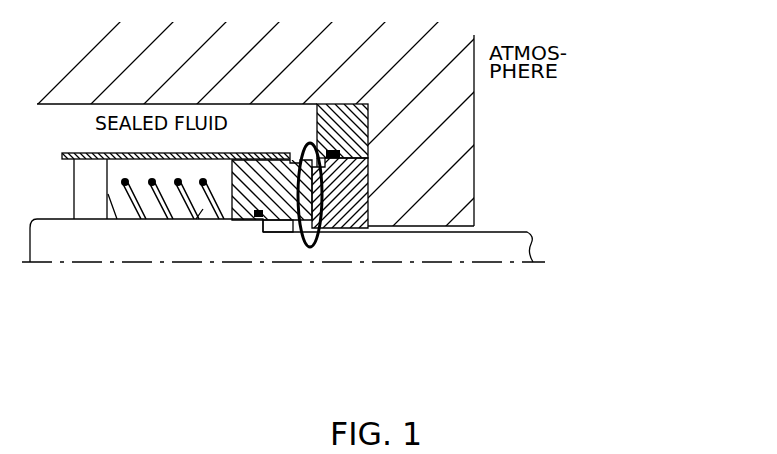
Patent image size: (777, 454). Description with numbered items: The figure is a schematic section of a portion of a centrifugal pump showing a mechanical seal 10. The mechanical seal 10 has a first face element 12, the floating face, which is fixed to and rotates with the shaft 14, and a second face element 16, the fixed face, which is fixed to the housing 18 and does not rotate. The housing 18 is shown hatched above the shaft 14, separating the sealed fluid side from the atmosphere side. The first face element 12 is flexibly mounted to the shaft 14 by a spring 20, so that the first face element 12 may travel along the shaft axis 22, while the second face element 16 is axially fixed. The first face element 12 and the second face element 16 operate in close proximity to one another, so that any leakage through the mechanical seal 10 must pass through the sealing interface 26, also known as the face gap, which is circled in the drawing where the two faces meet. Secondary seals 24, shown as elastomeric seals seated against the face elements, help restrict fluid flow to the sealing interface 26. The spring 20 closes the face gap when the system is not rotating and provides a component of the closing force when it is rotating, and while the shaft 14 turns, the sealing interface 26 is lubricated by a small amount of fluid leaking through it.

The mechanical seal 10 is at (143, 365).
The first face element 12 is at (286, 225).
The shaft 14 is at (83, 246).
The second face element 16 is at (330, 233).
The housing 18 is at (301, 83).
The spring 20 is at (205, 208).
The shaft axis 22 is at (503, 232).
The secondary seals 24 is at (345, 150).
The sealing interface 26 is at (307, 255).